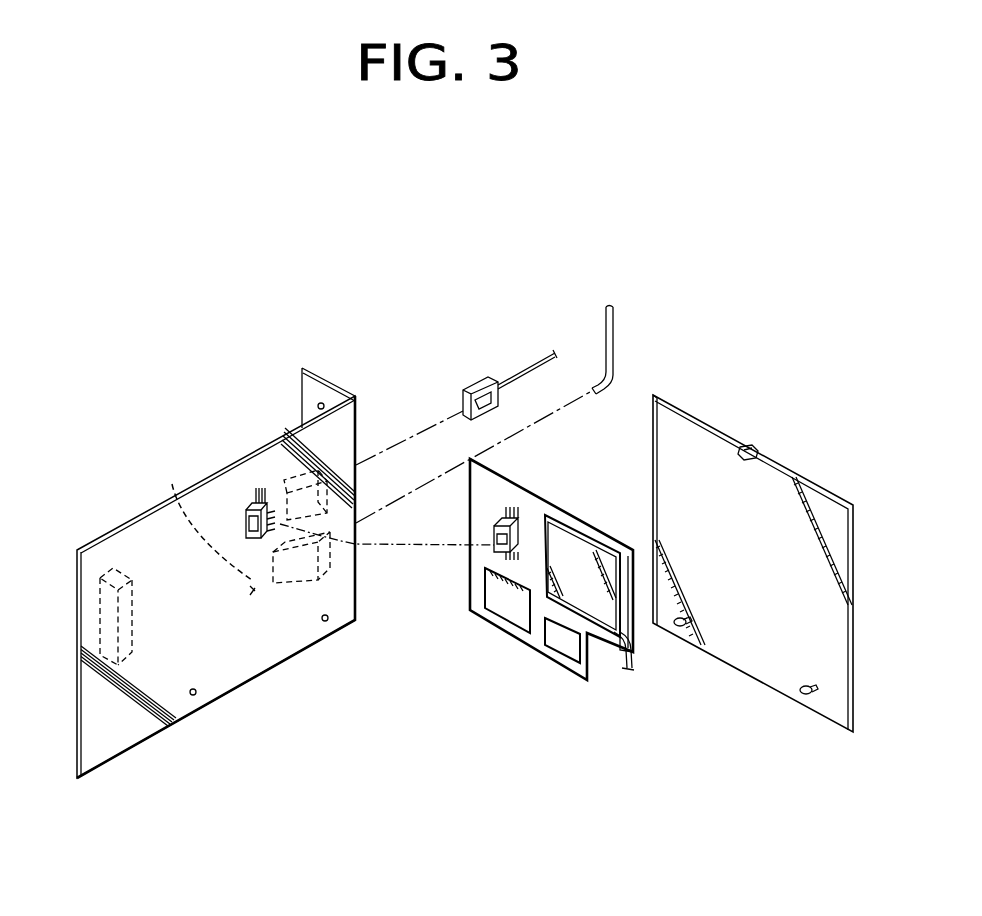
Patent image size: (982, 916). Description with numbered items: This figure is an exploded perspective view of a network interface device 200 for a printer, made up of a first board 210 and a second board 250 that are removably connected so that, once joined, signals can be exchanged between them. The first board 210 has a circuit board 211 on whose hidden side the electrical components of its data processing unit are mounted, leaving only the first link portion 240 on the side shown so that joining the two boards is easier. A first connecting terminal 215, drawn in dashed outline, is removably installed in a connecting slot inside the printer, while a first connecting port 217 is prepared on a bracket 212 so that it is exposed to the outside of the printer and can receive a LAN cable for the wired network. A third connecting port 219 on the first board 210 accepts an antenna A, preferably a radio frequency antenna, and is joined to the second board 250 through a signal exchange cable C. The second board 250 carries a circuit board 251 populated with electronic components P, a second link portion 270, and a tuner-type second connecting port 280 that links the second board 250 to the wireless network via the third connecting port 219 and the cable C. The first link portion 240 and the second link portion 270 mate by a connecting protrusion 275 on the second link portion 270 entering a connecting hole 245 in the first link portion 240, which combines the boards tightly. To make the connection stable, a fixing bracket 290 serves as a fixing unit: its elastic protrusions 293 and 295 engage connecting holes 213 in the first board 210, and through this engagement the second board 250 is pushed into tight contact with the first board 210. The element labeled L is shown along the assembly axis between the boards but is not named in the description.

The network interface device 200 is at (161, 334).
The first board 210 is at (251, 684).
The circuit board 211 is at (123, 722).
The bracket 212 is at (313, 370).
The connecting holes 213 is at (328, 621).
The first connecting terminal 215 is at (108, 566).
The first connecting port 217 is at (290, 478).
The third connecting port 219 is at (320, 574).
The first link portion 240 is at (277, 490).
The connecting hole 245 is at (257, 492).
The second board 250 is at (540, 668).
The circuit board 251 is at (505, 630).
The second link portion 270 is at (530, 532).
The connecting protrusion 275 is at (492, 539).
The second connecting port 280 is at (587, 563).
The fixing bracket 290 is at (747, 658).
The elastic protrusions 293 is at (675, 630).
The elastic protrusion 295 is at (737, 440).
The light source unit L is at (476, 376).
The antenna A is at (614, 348).
The signal exchange cable C is at (650, 663).
The electronic components P is at (492, 597).